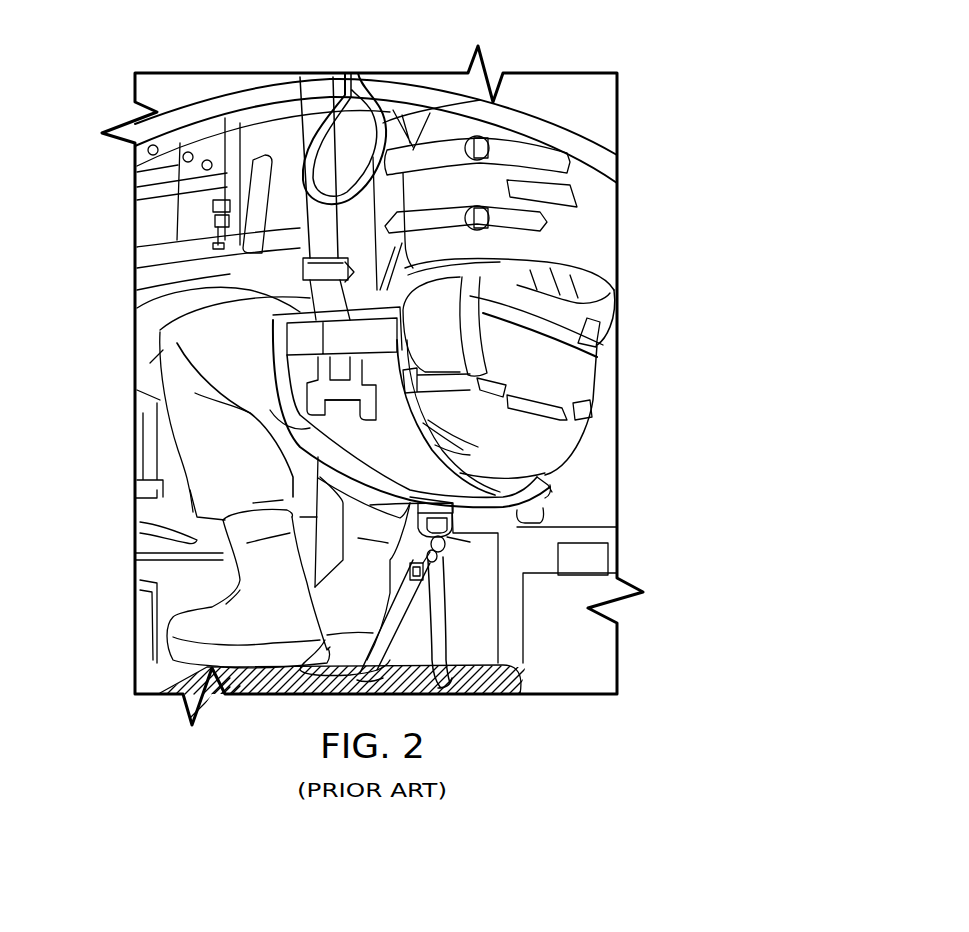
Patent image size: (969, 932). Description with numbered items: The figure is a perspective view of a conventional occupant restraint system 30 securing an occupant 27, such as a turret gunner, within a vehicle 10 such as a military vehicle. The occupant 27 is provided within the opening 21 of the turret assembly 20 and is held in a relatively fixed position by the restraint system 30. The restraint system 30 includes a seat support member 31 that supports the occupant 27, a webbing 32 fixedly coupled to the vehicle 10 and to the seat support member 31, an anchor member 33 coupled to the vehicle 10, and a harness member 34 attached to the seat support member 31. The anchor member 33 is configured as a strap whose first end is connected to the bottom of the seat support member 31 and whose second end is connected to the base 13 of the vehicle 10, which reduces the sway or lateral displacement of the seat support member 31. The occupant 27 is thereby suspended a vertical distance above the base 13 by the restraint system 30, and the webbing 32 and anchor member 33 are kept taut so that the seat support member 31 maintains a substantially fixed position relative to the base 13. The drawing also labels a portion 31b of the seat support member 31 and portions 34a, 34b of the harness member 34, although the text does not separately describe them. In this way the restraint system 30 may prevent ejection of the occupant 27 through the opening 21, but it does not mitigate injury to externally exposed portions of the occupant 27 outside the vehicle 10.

The vehicle 10 is at (706, 120).
The base 13 is at (498, 690).
The turret assembly 20 is at (220, 83).
The opening 21 is at (266, 140).
The occupant 27 is at (632, 197).
The restraint system 30 is at (252, 259).
The seat support member 31 is at (548, 500).
The harness plate 31b is at (287, 344).
The webbing 32 is at (306, 120).
The anchor member 33 is at (437, 583).
The harness member 34 is at (568, 380).
The pouch flap 34a is at (550, 313).
The pouch strap 34b is at (502, 348).